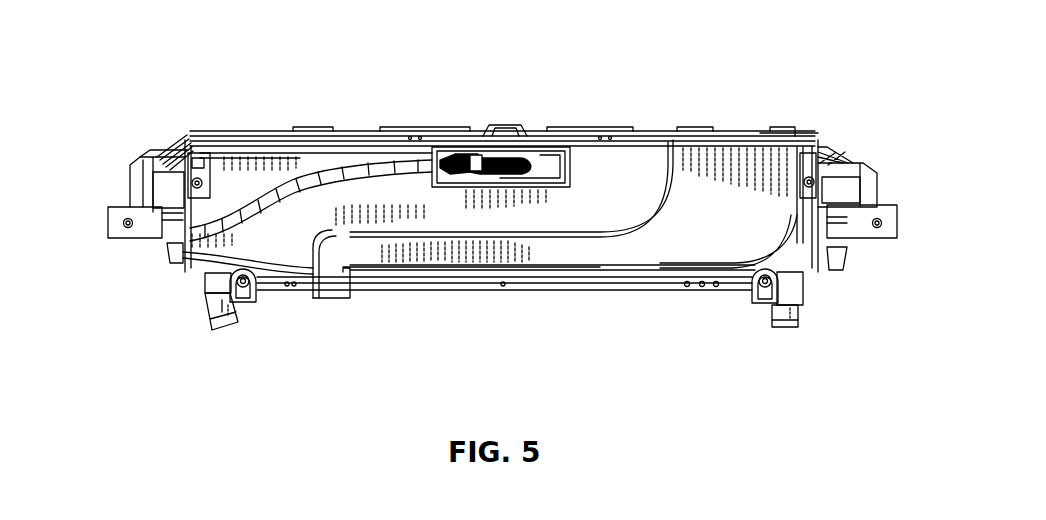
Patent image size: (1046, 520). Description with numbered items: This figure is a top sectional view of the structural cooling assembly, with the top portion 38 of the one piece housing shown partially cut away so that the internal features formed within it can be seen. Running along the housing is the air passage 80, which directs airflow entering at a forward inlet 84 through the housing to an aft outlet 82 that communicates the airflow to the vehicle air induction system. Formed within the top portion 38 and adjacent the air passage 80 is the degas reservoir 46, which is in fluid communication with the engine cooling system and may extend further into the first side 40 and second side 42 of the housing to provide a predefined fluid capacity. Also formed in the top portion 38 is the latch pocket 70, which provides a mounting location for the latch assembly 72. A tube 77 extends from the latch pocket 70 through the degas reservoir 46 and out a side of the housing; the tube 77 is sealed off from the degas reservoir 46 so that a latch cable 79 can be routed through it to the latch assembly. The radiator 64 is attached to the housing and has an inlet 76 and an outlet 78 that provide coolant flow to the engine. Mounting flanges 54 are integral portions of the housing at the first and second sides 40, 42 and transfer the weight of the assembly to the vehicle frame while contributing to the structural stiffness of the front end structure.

The top portion 38 is at (188, 285).
The first side 40 is at (884, 191).
The second side 42 is at (124, 183).
The degas reservoir 46 is at (462, 129).
The mounting flanges 54 is at (115, 219).
The radiator 64 is at (790, 283).
The latch pocket 70 is at (553, 166).
The latch assembly 72 is at (527, 125).
The inlet 76 is at (220, 336).
The tube 77 is at (258, 186).
The outlet 78 is at (790, 336).
The latch cable 79 is at (461, 176).
The air passage 80 is at (654, 233).
The outlet 82 is at (331, 306).
The forward inlet 84 is at (770, 138).